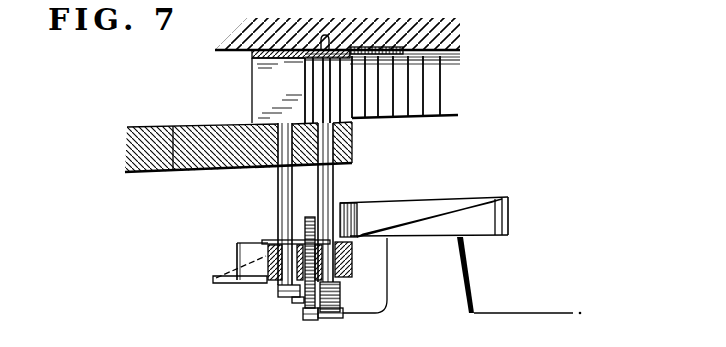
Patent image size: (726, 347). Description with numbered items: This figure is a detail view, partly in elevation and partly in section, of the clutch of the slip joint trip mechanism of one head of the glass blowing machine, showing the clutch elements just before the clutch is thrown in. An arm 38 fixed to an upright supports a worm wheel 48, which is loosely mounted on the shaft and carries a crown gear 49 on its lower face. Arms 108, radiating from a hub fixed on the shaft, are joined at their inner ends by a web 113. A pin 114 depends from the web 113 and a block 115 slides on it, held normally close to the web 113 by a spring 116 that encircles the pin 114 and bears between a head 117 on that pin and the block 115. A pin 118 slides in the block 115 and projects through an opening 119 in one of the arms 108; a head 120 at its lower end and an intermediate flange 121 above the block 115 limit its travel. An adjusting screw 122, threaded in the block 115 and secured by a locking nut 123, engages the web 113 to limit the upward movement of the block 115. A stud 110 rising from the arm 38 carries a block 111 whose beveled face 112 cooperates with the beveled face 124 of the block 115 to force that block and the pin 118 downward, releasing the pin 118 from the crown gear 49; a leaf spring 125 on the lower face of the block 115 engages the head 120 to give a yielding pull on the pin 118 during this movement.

The arm 38 is at (539, 313).
The worm wheel 48 is at (393, 30).
The crown gear 49 is at (252, 76).
The arm 108 is at (131, 173).
The stud 110 is at (462, 286).
The block 111 is at (443, 202).
The beveled face 112 is at (408, 222).
The web 113 is at (353, 158).
The pin 114 is at (354, 208).
The block 115 is at (275, 282).
The spring 116 is at (340, 297).
The head 117 is at (342, 313).
The pin 118 is at (278, 204).
The opening 119 is at (272, 150).
The head 120 is at (281, 299).
The flange 121 is at (278, 244).
The adjusting screw 122 is at (308, 226).
The locking nut 123 is at (304, 308).
The beveled face 124 is at (234, 273).
The leaf spring 125 is at (294, 305).